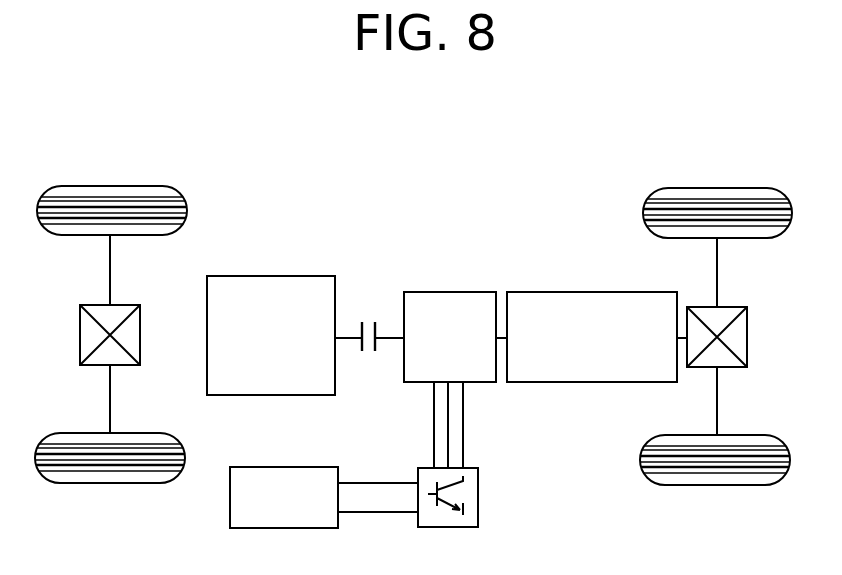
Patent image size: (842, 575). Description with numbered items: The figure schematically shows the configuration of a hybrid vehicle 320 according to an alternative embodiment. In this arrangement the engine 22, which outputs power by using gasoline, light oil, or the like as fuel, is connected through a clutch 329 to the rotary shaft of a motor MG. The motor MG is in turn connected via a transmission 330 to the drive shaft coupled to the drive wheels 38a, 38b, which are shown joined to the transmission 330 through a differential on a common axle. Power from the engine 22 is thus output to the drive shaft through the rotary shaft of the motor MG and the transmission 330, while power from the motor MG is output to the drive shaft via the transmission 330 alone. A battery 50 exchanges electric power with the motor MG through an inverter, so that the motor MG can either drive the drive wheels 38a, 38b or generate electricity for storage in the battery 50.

The hybrid vehicle 320 is at (526, 145).
The engine 22 is at (275, 272).
The clutch 329 is at (370, 315).
The motor MG is at (450, 291).
The transmission 330 is at (568, 291).
The drive wheel 38a is at (718, 188).
The drive wheel 38b is at (717, 487).
The battery 50 is at (287, 466).